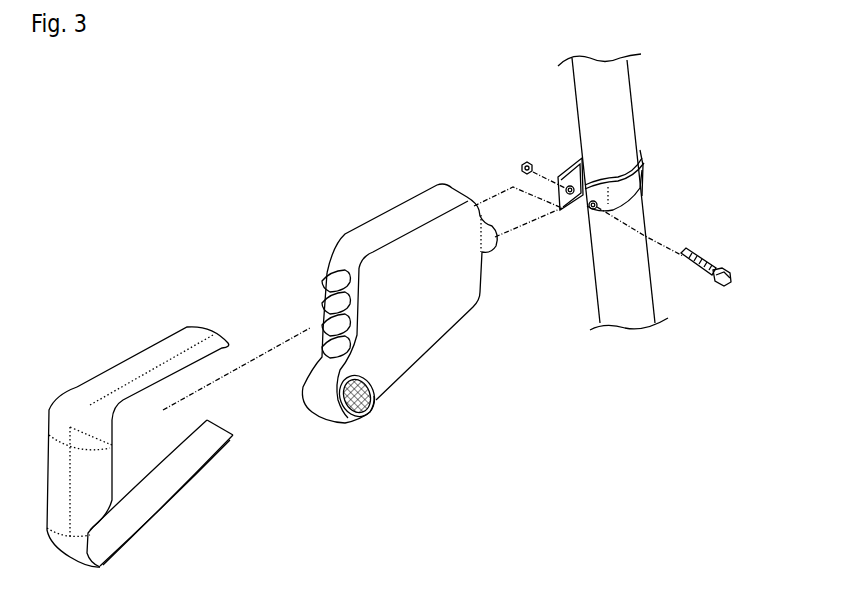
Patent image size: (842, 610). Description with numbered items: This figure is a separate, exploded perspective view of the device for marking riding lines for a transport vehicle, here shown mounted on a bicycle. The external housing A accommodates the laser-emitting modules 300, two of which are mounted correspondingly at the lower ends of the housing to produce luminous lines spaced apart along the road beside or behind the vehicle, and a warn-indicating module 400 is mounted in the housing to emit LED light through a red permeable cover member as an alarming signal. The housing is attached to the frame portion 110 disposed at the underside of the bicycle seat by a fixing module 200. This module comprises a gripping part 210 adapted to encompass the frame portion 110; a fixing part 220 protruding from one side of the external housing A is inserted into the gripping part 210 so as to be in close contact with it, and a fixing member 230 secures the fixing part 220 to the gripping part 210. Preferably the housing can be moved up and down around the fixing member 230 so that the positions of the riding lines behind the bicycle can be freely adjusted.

The frame portion 110 is at (632, 112).
The fixing module 200 is at (632, 180).
The gripping part 210 is at (653, 187).
The fixing part 220 is at (498, 246).
The fixing member 230 is at (731, 286).
The laser-emitting module 300 is at (373, 411).
The warn-indicating module 400 is at (320, 287).
The external housing A is at (120, 363).